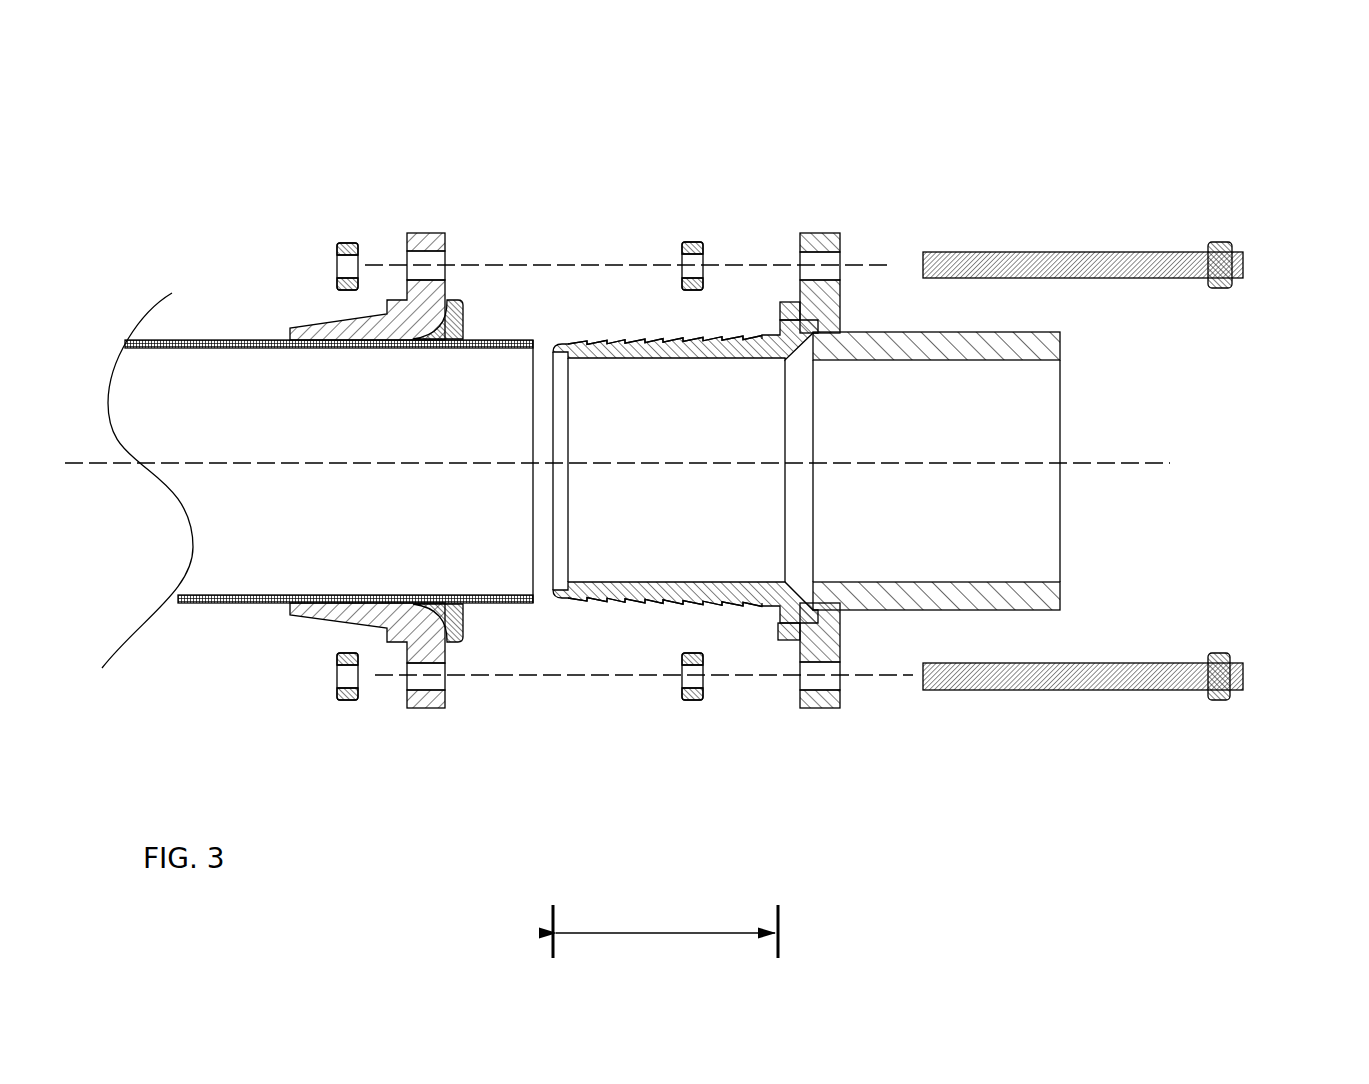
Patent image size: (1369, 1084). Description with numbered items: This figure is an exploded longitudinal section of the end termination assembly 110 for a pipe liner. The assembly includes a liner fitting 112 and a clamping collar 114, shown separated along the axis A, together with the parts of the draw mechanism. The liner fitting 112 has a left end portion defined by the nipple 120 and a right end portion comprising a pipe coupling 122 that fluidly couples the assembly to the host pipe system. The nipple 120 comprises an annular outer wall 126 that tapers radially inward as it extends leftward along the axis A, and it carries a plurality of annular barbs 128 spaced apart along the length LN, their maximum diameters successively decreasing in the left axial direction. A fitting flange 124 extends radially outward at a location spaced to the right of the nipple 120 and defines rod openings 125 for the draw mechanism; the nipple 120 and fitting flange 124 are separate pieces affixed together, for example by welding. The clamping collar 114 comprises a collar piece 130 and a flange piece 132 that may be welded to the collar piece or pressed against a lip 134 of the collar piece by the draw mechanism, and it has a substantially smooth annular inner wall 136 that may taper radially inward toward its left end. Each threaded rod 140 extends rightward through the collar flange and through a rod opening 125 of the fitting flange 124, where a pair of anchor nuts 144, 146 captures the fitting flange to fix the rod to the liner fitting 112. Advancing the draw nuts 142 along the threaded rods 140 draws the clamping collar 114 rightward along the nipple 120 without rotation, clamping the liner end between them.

The end termination assembly 110 is at (1072, 115).
The liner fitting 112 is at (850, 689).
The clamping collar 114 is at (283, 619).
The nipple 120 is at (547, 582).
The pipe coupling 122 is at (1050, 348).
The fitting flange 124 is at (820, 233).
The rod opening 125 is at (842, 305).
The annular outer wall 126 is at (622, 342).
The annular barbs 128 is at (668, 604).
The collar piece 130 is at (318, 330).
The flange piece 132 is at (426, 234).
The lip 134 is at (458, 301).
The annular inner wall 136 is at (333, 618).
The threaded rod 140 is at (960, 252).
The draw nut 142 is at (347, 243).
The anchor nut 144 is at (692, 242).
The anchor nut 146 is at (1223, 244).
The axis A is at (258, 462).
The length LN is at (663, 930).